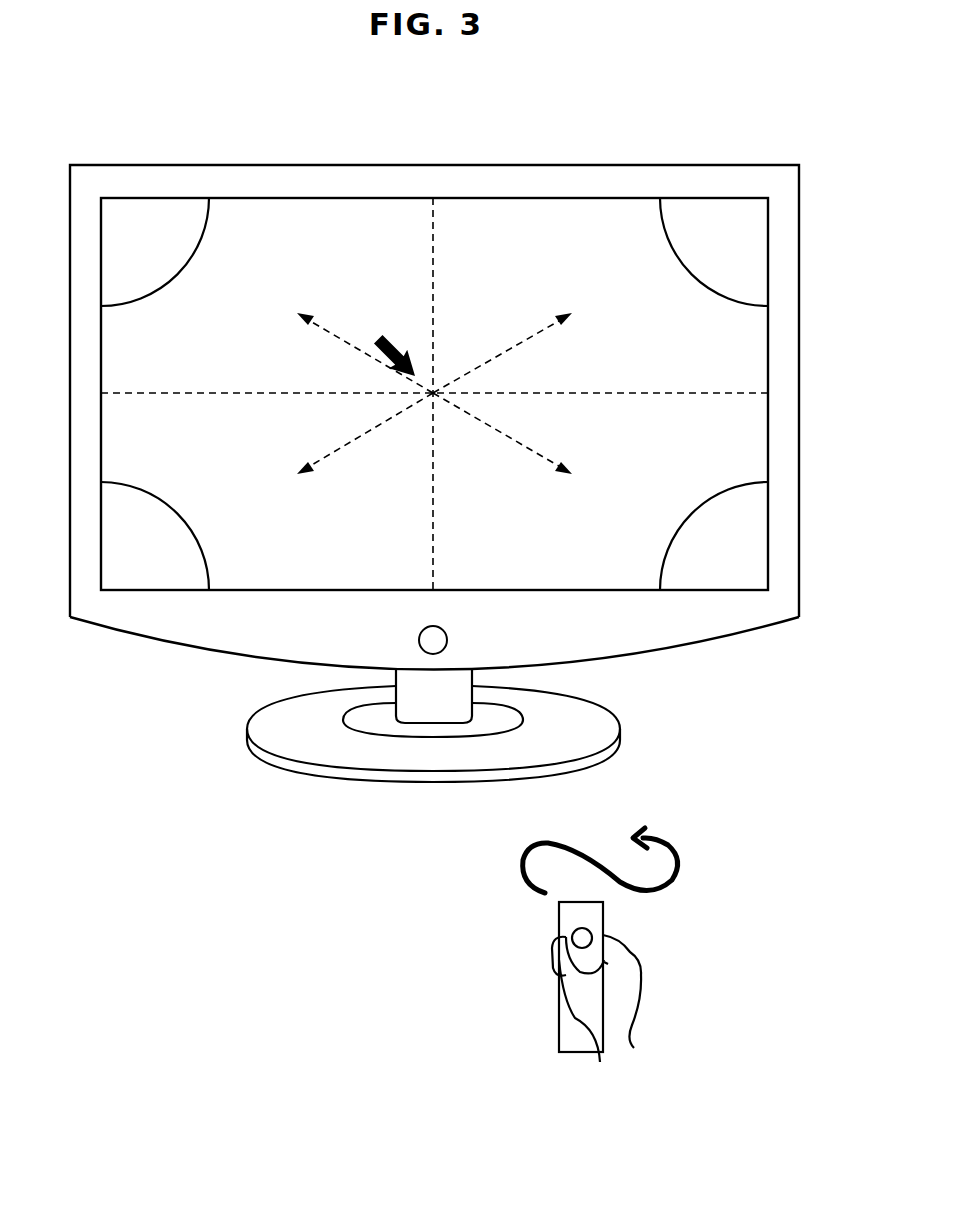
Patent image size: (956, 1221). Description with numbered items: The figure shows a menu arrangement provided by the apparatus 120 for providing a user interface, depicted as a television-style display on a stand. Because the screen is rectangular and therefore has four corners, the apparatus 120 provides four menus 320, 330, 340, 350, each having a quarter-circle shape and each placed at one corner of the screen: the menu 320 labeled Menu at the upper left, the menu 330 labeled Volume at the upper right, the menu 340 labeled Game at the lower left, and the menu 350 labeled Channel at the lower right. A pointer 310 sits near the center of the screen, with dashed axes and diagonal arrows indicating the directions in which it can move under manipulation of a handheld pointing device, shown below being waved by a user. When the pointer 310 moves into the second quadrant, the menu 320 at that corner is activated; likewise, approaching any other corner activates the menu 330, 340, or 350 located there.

The apparatus for providing a user interface 120 is at (433, 165).
The pointer 310 is at (441, 386).
The menu 320 is at (149, 218).
The menu 330 is at (720, 218).
The menu 340 is at (148, 571).
The menu 350 is at (720, 572).